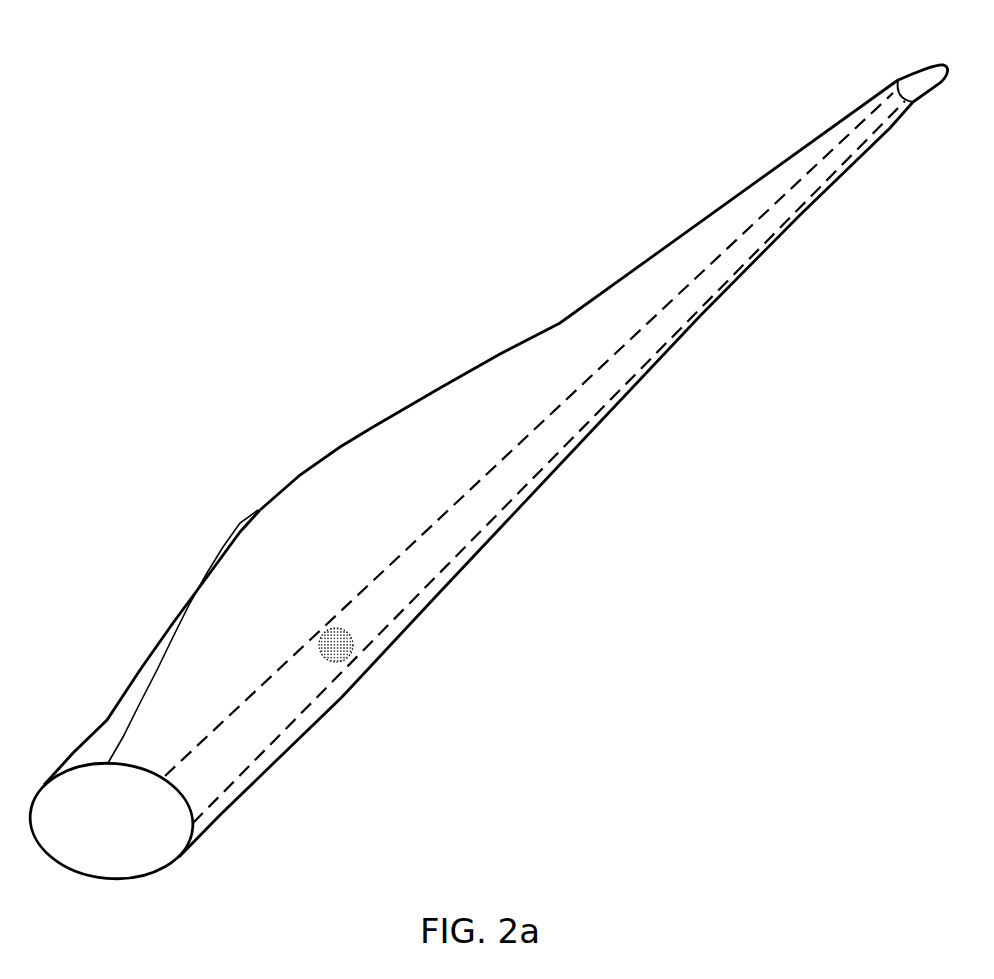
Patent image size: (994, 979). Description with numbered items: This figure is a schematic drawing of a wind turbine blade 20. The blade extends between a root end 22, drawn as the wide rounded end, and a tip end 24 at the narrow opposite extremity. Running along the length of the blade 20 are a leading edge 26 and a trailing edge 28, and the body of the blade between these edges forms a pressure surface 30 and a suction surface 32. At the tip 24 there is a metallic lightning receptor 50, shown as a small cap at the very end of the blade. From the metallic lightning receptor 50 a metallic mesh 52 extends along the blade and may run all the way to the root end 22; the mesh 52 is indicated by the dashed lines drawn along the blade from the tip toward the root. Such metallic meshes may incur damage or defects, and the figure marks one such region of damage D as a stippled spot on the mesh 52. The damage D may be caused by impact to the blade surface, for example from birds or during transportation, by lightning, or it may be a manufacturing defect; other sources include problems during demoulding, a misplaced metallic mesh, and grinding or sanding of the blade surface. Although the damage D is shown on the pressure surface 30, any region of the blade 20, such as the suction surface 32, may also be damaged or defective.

The wind turbine blade 20 is at (298, 208).
The root end 22 is at (95, 880).
The tip end 24 is at (944, 64).
The leading edge 26 is at (517, 504).
The trailing edge 28 is at (298, 476).
The pressure surface 30 is at (543, 357).
The suction surface 32 is at (110, 723).
The metallic lightning receptor 50 is at (915, 78).
The metallic mesh 52 is at (633, 360).
The region of damage D is at (348, 648).